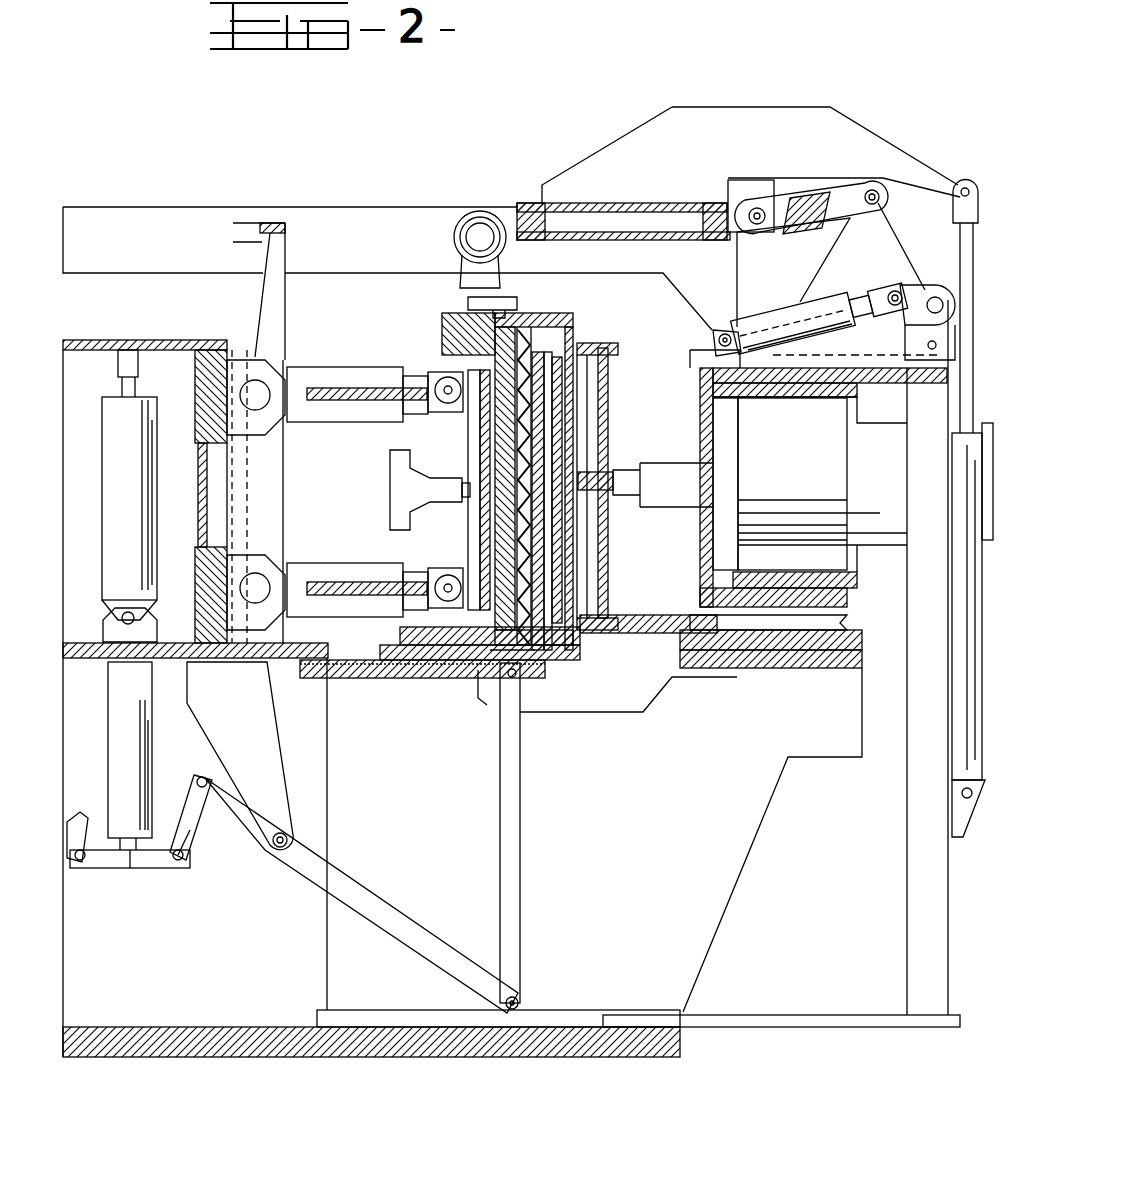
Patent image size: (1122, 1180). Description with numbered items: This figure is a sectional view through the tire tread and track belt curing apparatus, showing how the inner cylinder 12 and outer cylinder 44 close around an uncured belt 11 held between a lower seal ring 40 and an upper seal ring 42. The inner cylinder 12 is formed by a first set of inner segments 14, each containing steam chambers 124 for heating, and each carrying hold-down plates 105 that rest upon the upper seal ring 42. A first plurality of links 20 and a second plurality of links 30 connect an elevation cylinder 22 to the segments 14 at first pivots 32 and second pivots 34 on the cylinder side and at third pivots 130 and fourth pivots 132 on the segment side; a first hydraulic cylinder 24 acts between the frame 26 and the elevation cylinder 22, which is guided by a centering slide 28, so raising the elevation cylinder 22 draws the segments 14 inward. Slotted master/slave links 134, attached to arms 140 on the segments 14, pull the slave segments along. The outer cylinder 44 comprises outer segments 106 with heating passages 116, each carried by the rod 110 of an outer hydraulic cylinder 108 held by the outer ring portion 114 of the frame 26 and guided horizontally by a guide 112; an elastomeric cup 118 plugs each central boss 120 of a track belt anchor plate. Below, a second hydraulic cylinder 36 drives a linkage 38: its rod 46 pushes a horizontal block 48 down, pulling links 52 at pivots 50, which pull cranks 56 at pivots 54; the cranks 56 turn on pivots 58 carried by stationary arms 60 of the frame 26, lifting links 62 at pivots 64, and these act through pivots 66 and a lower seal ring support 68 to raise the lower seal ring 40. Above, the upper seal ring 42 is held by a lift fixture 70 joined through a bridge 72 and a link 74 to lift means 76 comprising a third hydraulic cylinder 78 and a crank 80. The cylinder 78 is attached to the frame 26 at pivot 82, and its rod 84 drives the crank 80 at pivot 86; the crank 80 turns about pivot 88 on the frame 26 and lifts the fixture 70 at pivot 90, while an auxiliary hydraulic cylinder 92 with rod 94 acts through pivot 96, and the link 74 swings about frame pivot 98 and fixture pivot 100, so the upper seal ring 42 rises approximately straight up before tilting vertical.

The uncured belt 11 is at (560, 350).
The inner cylinder 12 is at (462, 672).
The first set of inner segments 14 is at (498, 428).
The first plurality of links 20 is at (345, 375).
The elevation cylinder 22 is at (113, 340).
The first hydraulic cylinder 24 is at (112, 410).
The frame 26 is at (907, 433).
The centering slide 28 is at (283, 445).
The second plurality of links 30 is at (330, 568).
The first pivots 32 is at (250, 378).
The second plurality of pivots 34 is at (272, 605).
The second hydraulic cylinder 36 is at (120, 714).
The linkage 38 is at (267, 866).
The lower seal ring 40 is at (493, 675).
The upper seal ring 42 is at (520, 335).
The outer cylinder 44 is at (555, 652).
The rod 46 is at (118, 838).
The horizontal block 48 is at (115, 868).
The pivots 50 is at (180, 868).
The links 52 is at (193, 830).
The pivots 54 is at (202, 775).
The cranks 56 is at (320, 875).
The pivots 58 is at (290, 835).
The stationary arms 60 is at (246, 714).
The links 62 is at (500, 858).
The pivots 64 is at (520, 1000).
The pivots 66 is at (507, 700).
The lower seal ring support 68 is at (525, 660).
The lift fixture 70 is at (165, 207).
The bridge 72 is at (683, 110).
The link 74 is at (770, 195).
The lift means 76 is at (802, 267).
The third hydraulic cylinder 78 is at (780, 325).
The crank 80 is at (928, 290).
The pivot 82 is at (725, 333).
The rod 84 is at (852, 295).
The pivot 86 is at (895, 291).
The pivot 88 is at (928, 345).
The pivot 90 is at (718, 352).
The auxiliary hydraulic cylinder 92 is at (963, 483).
The rod 94 is at (958, 238).
The pivot 96 is at (966, 185).
The pivot 98 is at (872, 190).
The pivot 100 is at (740, 210).
The hold-down plates 105 is at (455, 320).
The outer segments 106 is at (535, 400).
The outer hydraulic cylinders 108 is at (822, 486).
The rod 110 is at (674, 494).
The guide 112 is at (847, 633).
The outer ring portion 114 is at (910, 811).
The passages 116 is at (560, 540).
The elastomeric cup 118 is at (535, 485).
The central boss 120 is at (540, 498).
The steam chambers 124 is at (483, 525).
The third plurality of pivots 130 is at (438, 385).
The fourth plurality of pivots 132 is at (448, 578).
The slotted master/slave links 134 is at (395, 490).
The arms 140 is at (470, 477).